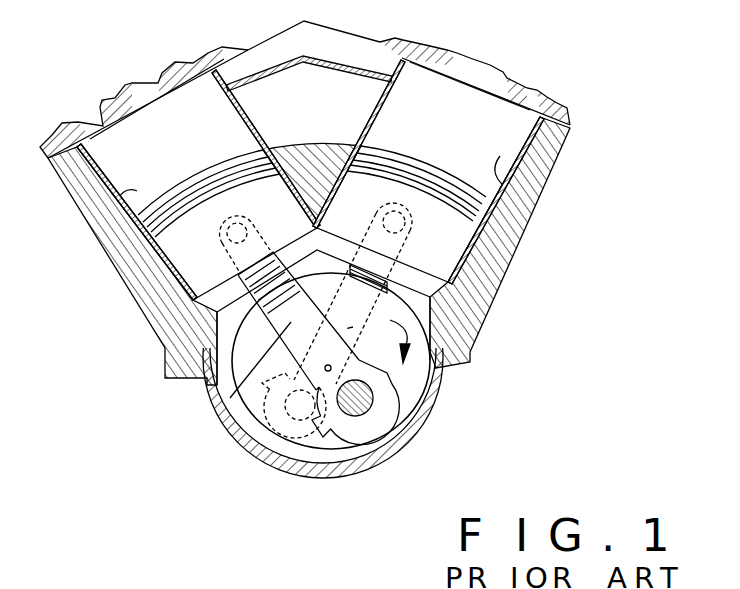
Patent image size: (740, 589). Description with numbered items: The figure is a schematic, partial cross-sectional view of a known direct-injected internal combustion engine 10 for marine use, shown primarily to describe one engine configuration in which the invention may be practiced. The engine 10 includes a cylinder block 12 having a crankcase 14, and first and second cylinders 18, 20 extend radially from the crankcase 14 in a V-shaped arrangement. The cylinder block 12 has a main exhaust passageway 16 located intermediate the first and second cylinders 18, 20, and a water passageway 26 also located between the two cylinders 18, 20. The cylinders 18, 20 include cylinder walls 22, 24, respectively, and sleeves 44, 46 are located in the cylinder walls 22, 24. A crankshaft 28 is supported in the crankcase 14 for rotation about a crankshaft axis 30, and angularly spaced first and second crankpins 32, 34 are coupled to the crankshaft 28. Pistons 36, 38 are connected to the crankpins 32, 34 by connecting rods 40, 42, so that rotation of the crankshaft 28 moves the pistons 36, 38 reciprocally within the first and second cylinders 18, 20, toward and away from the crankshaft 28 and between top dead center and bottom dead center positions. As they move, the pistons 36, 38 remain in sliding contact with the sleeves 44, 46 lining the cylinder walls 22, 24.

The internal combustion engine 10 is at (441, 31).
The cylinder block 12 is at (575, 162).
The crankcase 14 is at (352, 470).
The main exhaust passageway 16 is at (316, 53).
The first cylinder 18 is at (179, 151).
The second cylinder 20 is at (443, 139).
The cylinder wall 22 is at (118, 200).
The cylinder wall 24 is at (517, 150).
The water passageway 26 is at (325, 118).
The crankshaft 28 is at (365, 361).
The crankshaft axis 30 is at (333, 367).
The first crankpin 32 is at (368, 412).
The second crankpin 34 is at (296, 436).
The piston 36 is at (205, 263).
The piston 38 is at (447, 239).
The connecting rod 40 is at (215, 407).
The connecting rod 42 is at (353, 327).
The sleeve 44 is at (103, 152).
The sleeve 46 is at (522, 125).